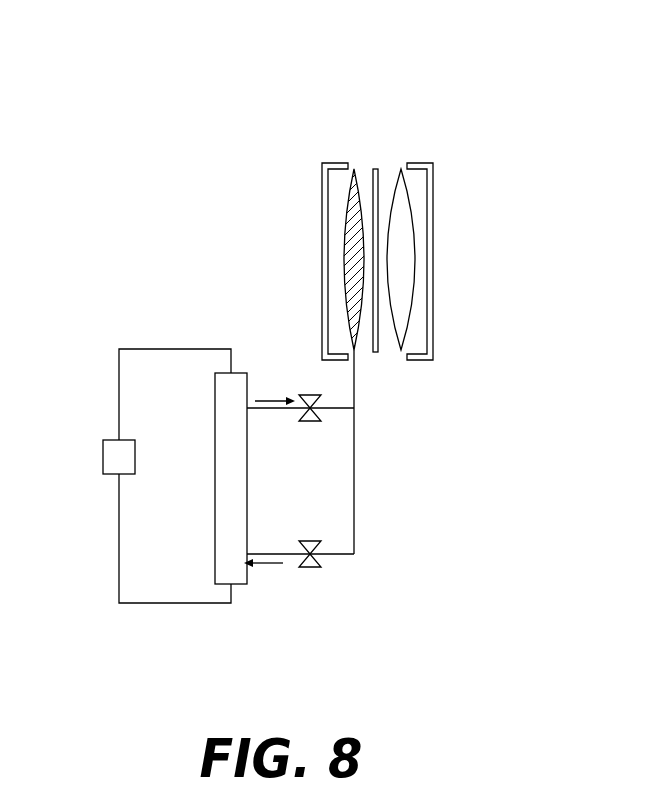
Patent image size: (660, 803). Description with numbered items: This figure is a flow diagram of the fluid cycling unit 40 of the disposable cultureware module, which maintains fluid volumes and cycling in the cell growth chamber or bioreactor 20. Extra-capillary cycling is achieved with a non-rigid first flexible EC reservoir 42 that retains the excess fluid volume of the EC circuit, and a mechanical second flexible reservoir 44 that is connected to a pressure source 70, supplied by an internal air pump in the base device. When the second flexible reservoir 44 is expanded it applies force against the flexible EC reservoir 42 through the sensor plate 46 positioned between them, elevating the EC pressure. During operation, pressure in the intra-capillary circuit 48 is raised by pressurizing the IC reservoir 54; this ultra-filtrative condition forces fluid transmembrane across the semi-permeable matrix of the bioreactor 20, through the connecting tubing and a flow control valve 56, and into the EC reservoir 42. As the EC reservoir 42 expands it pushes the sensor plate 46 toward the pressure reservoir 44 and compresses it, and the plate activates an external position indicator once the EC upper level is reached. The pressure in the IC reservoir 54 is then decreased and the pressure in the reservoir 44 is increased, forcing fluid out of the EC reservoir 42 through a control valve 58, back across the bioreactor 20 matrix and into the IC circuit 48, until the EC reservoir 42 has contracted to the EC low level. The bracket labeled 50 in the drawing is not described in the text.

The fluid cycling unit 40 is at (526, 156).
The first flexible EC reservoir 42 is at (340, 239).
The second flexible reservoir 44 is at (415, 238).
The sensor plate 46 is at (375, 352).
The housing bracket 50 is at (322, 283).
The pressure source 70 is at (420, 163).
The intra-capillary (IC) circuit 48 is at (160, 349).
The IC reservoir 54 is at (113, 467).
The bioreactor 20 is at (228, 575).
The flow control valve 56 is at (312, 395).
The control valve 58 is at (313, 567).